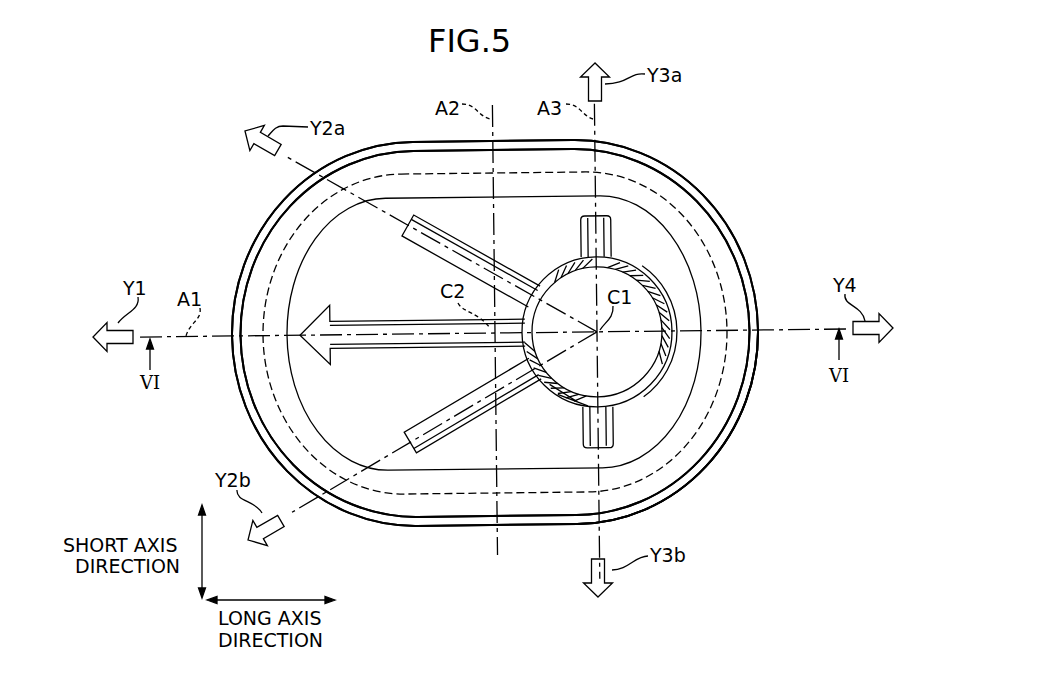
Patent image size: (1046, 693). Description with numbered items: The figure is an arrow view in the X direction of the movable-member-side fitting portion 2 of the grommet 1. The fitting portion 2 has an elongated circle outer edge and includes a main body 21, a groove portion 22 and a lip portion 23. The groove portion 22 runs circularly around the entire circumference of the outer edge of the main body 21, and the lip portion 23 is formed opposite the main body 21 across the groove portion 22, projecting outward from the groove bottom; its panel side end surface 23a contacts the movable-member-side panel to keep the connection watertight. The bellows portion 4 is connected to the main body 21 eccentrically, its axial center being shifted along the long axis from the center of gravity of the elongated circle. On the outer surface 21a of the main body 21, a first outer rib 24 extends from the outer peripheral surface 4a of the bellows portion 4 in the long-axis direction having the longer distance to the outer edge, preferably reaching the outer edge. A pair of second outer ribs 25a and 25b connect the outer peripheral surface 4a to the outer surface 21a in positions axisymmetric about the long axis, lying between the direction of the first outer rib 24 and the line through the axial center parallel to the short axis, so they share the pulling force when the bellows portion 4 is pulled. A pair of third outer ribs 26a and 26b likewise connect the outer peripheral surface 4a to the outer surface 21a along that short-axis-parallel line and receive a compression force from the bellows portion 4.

The grommet 1 is at (516, 290).
The movable-member-side fitting portion 2 is at (467, 331).
The bellows portion 4 is at (653, 332).
The outer peripheral surface 4a is at (675, 389).
The main body 21 is at (704, 226).
The outer surface 21a is at (683, 393).
The groove portion 22 is at (668, 201).
The lip portion 23 is at (638, 147).
The panel side end surface 23a is at (692, 467).
The first outer rib 24 is at (364, 320).
The second outer rib 25a is at (427, 249).
The second outer rib 25b is at (453, 404).
The third outer rib 26a is at (581, 235).
The third outer rib 26b is at (581, 426).